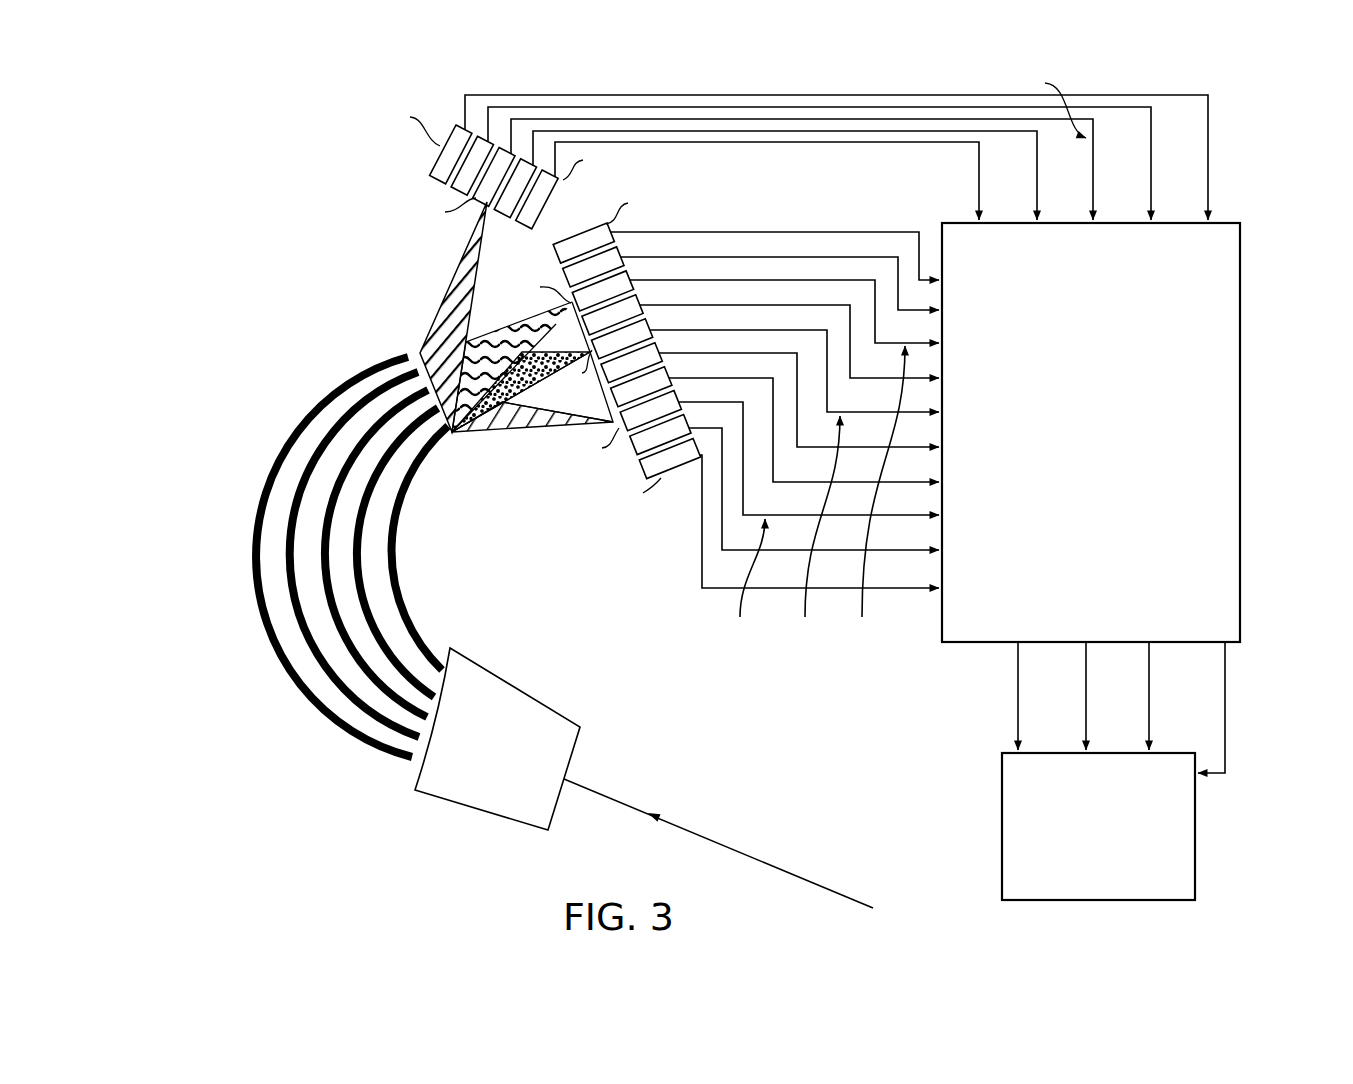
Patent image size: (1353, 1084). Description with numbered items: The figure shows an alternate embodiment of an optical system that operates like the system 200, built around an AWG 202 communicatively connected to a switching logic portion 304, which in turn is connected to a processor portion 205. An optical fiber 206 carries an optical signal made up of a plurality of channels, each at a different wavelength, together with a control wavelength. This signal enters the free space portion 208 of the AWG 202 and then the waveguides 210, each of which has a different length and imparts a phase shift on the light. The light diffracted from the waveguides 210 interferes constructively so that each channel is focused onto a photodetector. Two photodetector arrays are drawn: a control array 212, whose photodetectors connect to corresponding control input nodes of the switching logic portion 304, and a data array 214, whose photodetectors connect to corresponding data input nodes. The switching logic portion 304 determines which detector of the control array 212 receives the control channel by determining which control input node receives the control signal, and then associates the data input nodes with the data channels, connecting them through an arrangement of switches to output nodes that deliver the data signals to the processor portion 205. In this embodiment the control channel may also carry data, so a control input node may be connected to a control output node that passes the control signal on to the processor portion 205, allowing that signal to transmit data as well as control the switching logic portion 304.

The system 200 is at (250, 131).
The AWG 202 is at (210, 325).
The processor portion 205 is at (1195, 826).
The optical fiber 206 is at (745, 855).
The free space portion 208 is at (430, 806).
The waveguides 210 is at (262, 513).
The control array 212 is at (448, 108).
The data array 214 is at (582, 436).
The switching logic portion 304 is at (1240, 432).